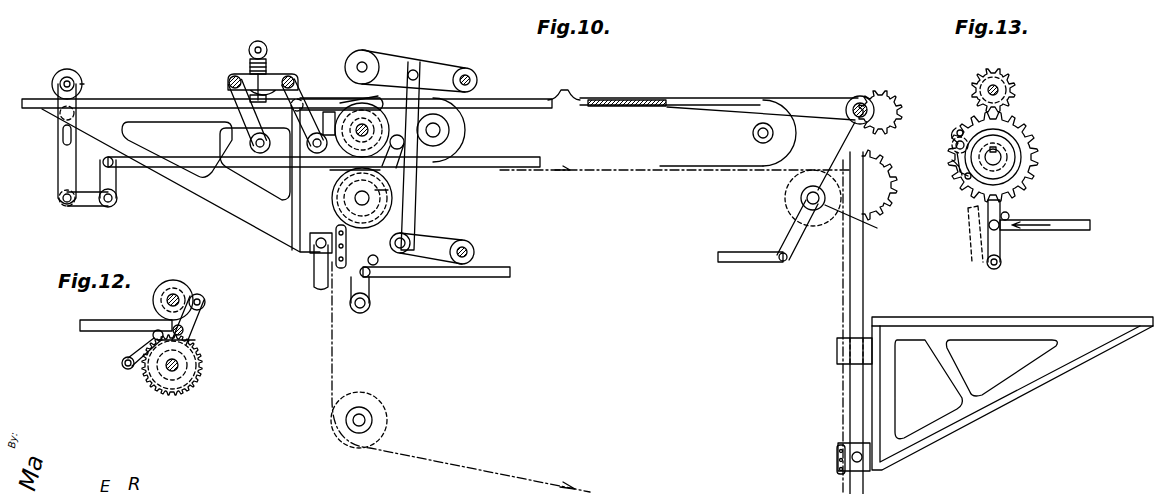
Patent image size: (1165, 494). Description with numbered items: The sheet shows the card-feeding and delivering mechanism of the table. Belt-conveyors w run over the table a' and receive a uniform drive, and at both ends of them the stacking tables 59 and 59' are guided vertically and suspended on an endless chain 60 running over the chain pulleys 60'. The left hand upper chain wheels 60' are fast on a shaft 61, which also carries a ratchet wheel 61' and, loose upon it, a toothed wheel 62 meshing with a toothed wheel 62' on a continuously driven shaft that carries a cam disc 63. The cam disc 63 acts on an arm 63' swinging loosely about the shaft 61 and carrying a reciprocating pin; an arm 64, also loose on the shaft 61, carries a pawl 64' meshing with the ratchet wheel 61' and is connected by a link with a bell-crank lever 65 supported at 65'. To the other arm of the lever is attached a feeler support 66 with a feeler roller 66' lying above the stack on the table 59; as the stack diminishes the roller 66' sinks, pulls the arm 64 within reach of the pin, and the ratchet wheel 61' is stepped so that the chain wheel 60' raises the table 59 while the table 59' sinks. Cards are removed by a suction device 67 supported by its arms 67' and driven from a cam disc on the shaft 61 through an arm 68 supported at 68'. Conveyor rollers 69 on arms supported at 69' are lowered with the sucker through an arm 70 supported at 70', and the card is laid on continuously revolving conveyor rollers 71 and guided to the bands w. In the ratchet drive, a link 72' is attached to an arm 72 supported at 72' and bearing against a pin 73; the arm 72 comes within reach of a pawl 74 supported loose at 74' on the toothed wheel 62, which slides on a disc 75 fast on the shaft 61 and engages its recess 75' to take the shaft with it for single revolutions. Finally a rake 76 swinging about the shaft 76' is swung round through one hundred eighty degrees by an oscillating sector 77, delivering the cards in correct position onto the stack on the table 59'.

In FIG. 10, the stacking table 59 is at (287, 165).
In FIG. 10, the stacking table 59' is at (1012, 383).
In FIG. 10, the endless chain 60 is at (601, 377).
In FIG. 10, the chain pulleys 60' is at (585, 308).
In FIG. 10, the shaft 61 is at (350, 259).
In FIG. 12, the shaft 61 is at (172, 387).
In FIG. 10, the ratchet wheel 61' is at (311, 205).
In FIG. 12, the ratchet wheel 61' is at (188, 365).
In FIG. 13, the ratchet wheel 61' is at (982, 89).
In FIG. 10, the toothed wheel 62 is at (359, 150).
In FIG. 13, the toothed wheel 62 is at (1001, 155).
In FIG. 10, the toothed wheel 62' is at (391, 135).
In FIG. 12, the cam disc 63 is at (199, 308).
In FIG. 12, the arm 63' is at (216, 303).
In FIG. 12, the arm 64 is at (194, 348).
In FIG. 12, the pawl 64' is at (203, 325).
In FIG. 10, the bell-crank lever 65 is at (103, 183).
In FIG. 10, the support 65' is at (120, 205).
In FIG. 10, the feeler support 66 is at (53, 145).
In FIG. 10, the feeler roller 66' is at (67, 73).
In FIG. 10, the suction device 67 is at (300, 99).
In FIG. 10, the arm 67' is at (266, 93).
In FIG. 10, the arm 68 is at (417, 234).
In FIG. 10, the support 68' is at (435, 265).
In FIG. 10, the conveyor rollers 69 is at (362, 58).
In FIG. 10, the support 69' is at (480, 78).
In FIG. 10, the arm 70 is at (433, 238).
In FIG. 10, the support 70' is at (478, 252).
In FIG. 10, the conveyor rollers 71 is at (352, 104).
In FIG. 13, the arm 72 is at (1000, 231).
In FIG. 13, the support 72' is at (1013, 265).
In FIG. 13, the pin 73 is at (1009, 216).
In FIG. 13, the pawl 74 is at (949, 165).
In FIG. 13, the pawl support 74' is at (948, 142).
In FIG. 13, the disc 75 is at (1013, 157).
In FIG. 13, the recess 75' is at (1020, 170).
In FIG. 10, the rake 76 is at (728, 170).
In FIG. 10, the shaft 76' is at (856, 96).
In FIG. 10, the sector 77 is at (887, 200).
In FIG. 10, the belt-conveyors W is at (564, 85).
In FIG. 10, the table a' is at (675, 135).